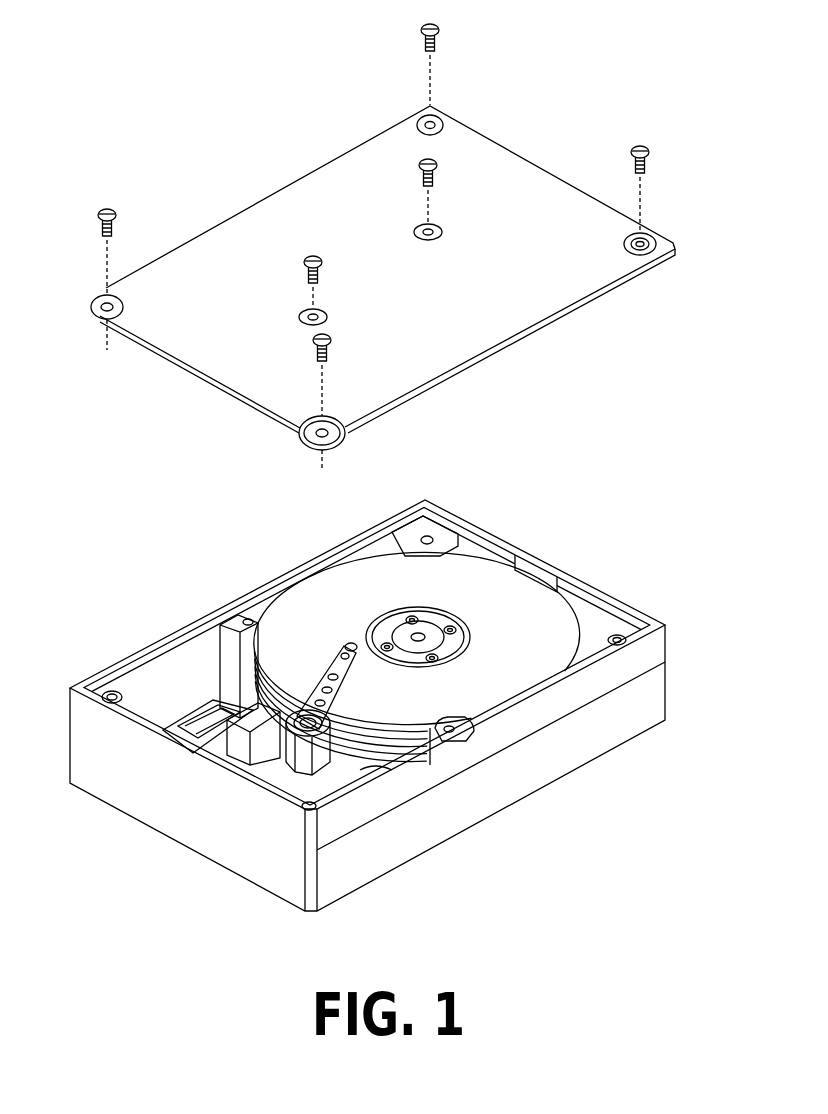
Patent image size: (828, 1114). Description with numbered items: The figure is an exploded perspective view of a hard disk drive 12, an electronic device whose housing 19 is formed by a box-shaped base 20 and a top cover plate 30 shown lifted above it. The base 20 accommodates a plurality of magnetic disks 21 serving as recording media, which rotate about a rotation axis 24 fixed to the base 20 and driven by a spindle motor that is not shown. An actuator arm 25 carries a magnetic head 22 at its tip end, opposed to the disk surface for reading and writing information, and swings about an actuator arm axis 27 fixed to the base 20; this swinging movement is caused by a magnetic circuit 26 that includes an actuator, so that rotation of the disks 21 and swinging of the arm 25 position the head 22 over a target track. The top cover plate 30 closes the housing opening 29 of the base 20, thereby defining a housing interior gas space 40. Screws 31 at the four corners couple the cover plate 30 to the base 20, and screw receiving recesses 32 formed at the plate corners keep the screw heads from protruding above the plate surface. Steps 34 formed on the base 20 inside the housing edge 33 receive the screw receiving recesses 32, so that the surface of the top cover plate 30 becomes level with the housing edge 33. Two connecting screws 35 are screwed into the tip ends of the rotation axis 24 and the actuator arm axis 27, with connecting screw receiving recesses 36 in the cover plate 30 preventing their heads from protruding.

The hard disk drive 12 is at (605, 112).
The housing 19 is at (604, 346).
The base 20 is at (541, 557).
The magnetic disks 21 is at (437, 747).
The magnetic heads 22 is at (350, 647).
The rotation axis 24 is at (422, 633).
The actuator arm 25 is at (340, 697).
The magnetic circuit 26 is at (357, 778).
The actuator arm axis 27 is at (305, 715).
The housing opening 29 is at (165, 662).
The top cover plate 30 is at (562, 312).
The screws 31 is at (440, 31).
The screw receiving recesses 32 is at (438, 115).
The housing edge 33 is at (553, 685).
The steps 34 is at (440, 550).
The connecting screws 35 is at (420, 172).
The connecting screw receiving recesses 36 is at (441, 232).
The housing interior gas space 40 is at (197, 672).